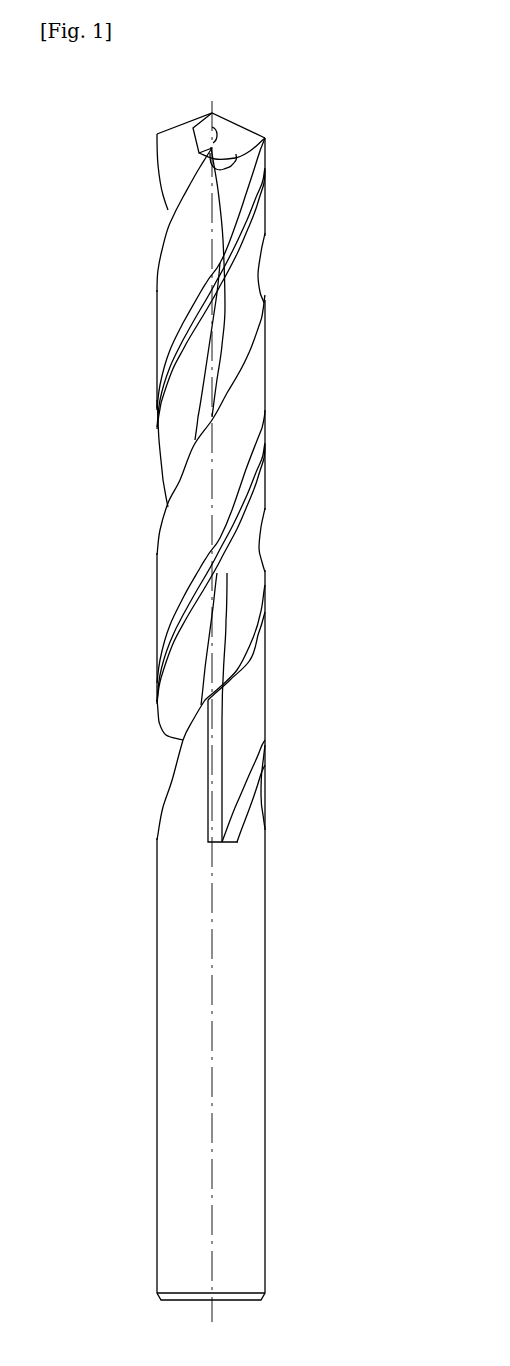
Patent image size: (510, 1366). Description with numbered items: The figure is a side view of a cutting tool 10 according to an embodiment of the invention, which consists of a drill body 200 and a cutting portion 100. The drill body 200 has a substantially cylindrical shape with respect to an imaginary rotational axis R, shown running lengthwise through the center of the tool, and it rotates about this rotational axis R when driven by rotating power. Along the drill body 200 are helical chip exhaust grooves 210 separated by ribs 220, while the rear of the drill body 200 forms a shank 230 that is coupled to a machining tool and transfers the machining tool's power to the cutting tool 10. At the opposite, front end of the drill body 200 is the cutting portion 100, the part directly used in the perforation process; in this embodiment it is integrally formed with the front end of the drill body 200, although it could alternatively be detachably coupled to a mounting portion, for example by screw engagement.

The cutting tool 10 is at (301, 145).
The cutting portion 100 is at (152, 137).
The drill body 200 is at (300, 554).
The chip exhaust grooves 210 is at (170, 452).
The ribs 220 is at (170, 598).
The shank 230 is at (253, 1117).
The rotational axis R is at (237, 150).